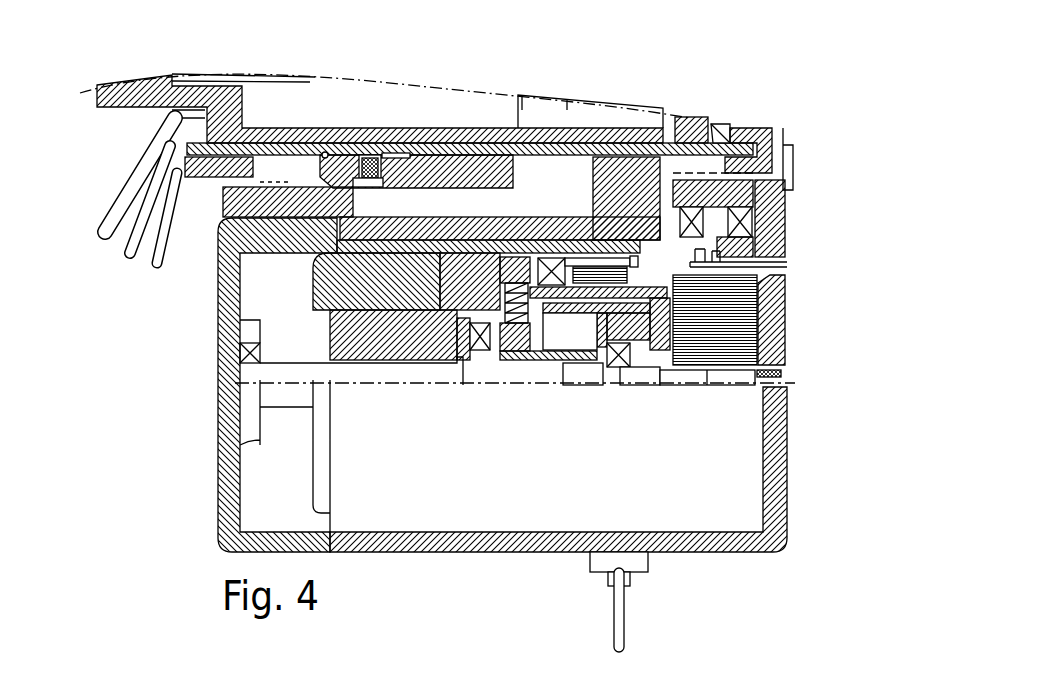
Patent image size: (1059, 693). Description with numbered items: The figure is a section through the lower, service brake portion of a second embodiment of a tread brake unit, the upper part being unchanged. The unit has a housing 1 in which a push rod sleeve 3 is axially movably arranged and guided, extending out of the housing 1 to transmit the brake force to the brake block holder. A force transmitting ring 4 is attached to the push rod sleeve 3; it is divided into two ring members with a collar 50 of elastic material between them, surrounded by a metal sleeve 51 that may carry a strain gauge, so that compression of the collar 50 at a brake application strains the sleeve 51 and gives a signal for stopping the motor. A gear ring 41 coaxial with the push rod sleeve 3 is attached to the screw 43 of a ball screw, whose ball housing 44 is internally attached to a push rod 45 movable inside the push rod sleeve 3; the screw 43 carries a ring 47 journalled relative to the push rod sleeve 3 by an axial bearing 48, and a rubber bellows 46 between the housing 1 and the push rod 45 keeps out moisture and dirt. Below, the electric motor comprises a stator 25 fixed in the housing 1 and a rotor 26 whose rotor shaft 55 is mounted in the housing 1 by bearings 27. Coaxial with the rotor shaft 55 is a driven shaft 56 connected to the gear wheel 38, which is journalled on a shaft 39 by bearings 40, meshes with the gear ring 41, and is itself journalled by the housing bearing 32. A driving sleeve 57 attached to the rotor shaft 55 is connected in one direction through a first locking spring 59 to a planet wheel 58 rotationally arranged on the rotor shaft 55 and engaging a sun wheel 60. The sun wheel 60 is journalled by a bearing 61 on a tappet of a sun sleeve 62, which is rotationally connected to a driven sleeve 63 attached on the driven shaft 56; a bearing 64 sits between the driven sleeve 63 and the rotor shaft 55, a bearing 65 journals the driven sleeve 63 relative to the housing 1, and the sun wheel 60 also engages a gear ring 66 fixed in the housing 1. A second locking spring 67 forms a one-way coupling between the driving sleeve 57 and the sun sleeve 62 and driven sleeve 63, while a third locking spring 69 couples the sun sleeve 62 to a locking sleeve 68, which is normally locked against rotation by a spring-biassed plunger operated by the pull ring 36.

The housing 1 is at (773, 330).
The push rod sleeve 3 is at (440, 167).
The force transmitting ring 4 is at (467, 163).
The stator 25 is at (357, 277).
The rotor 26 is at (357, 337).
The bearings 27 is at (240, 352).
The housing bearing 32 is at (787, 373).
The pull ring 36 is at (618, 618).
The gear wheel 38 is at (723, 313).
The shaft 39 is at (745, 265).
The bearings 40 is at (740, 230).
The gear ring 41 is at (775, 148).
The screw 43 is at (200, 79).
The ball housing 44 is at (615, 158).
The push rod 45 is at (114, 92).
The rubber bellows 46 is at (137, 170).
The ring 47 is at (688, 120).
The axial bearing 48 is at (730, 125).
The collar 50 is at (352, 152).
The metal sleeve 51 is at (403, 183).
The rotor shaft 55 is at (375, 376).
The driven shaft 56 is at (697, 380).
The driving sleeve 57 is at (583, 365).
The planet wheel 58 is at (519, 363).
The first locking spring 59 is at (540, 362).
The sun wheel 60 is at (510, 347).
The bearing 61 is at (530, 272).
The sun sleeve 62 is at (640, 385).
The driven sleeve 63 is at (647, 282).
The bearing 64 is at (602, 368).
The bearing 65 is at (553, 258).
The gear ring 66 is at (503, 252).
The second locking spring 67 is at (605, 340).
The locking sleeve 68 is at (595, 262).
The third locking spring 69 is at (658, 372).